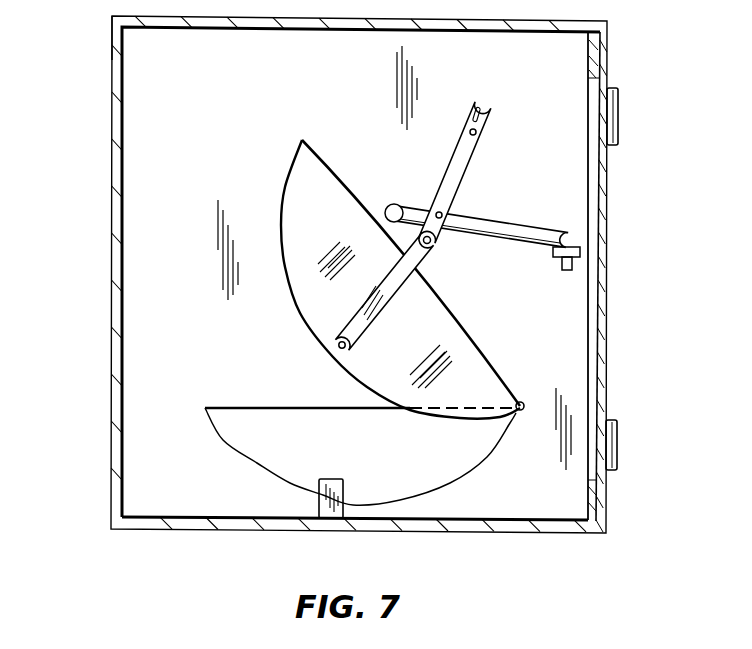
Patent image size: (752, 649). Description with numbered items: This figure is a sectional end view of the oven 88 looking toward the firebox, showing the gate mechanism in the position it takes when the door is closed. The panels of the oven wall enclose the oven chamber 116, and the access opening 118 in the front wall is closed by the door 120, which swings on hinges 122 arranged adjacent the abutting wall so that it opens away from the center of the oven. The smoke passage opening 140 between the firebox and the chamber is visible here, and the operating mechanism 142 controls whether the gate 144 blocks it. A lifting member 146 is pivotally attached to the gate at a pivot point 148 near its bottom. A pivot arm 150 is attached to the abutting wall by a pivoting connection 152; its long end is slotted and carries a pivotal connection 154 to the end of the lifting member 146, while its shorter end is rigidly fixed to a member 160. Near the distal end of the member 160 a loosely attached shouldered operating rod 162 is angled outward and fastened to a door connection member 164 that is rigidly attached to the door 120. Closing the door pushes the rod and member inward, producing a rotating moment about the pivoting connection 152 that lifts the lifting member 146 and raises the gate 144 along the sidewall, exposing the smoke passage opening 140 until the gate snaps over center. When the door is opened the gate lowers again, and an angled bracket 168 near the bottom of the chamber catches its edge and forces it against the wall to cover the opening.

The oven 88 is at (113, 18).
The oven chamber 116 is at (201, 110).
The access opening 118 is at (600, 75).
The door 120 is at (608, 228).
The hinges 122 is at (618, 121).
The smoke passage opening 140 is at (265, 467).
The operating mechanism 142 is at (191, 334).
The gate 144 is at (312, 316).
The lifting member 146 is at (380, 306).
The pivot point 148 is at (339, 348).
The pivot arm 150 is at (463, 184).
The pivoting connection 152 is at (443, 214).
The pivotal connection 154 is at (477, 134).
The member 160 is at (393, 204).
The operating rod 162 is at (514, 228).
The door connection member 164 is at (560, 270).
The bracket 168 is at (318, 497).